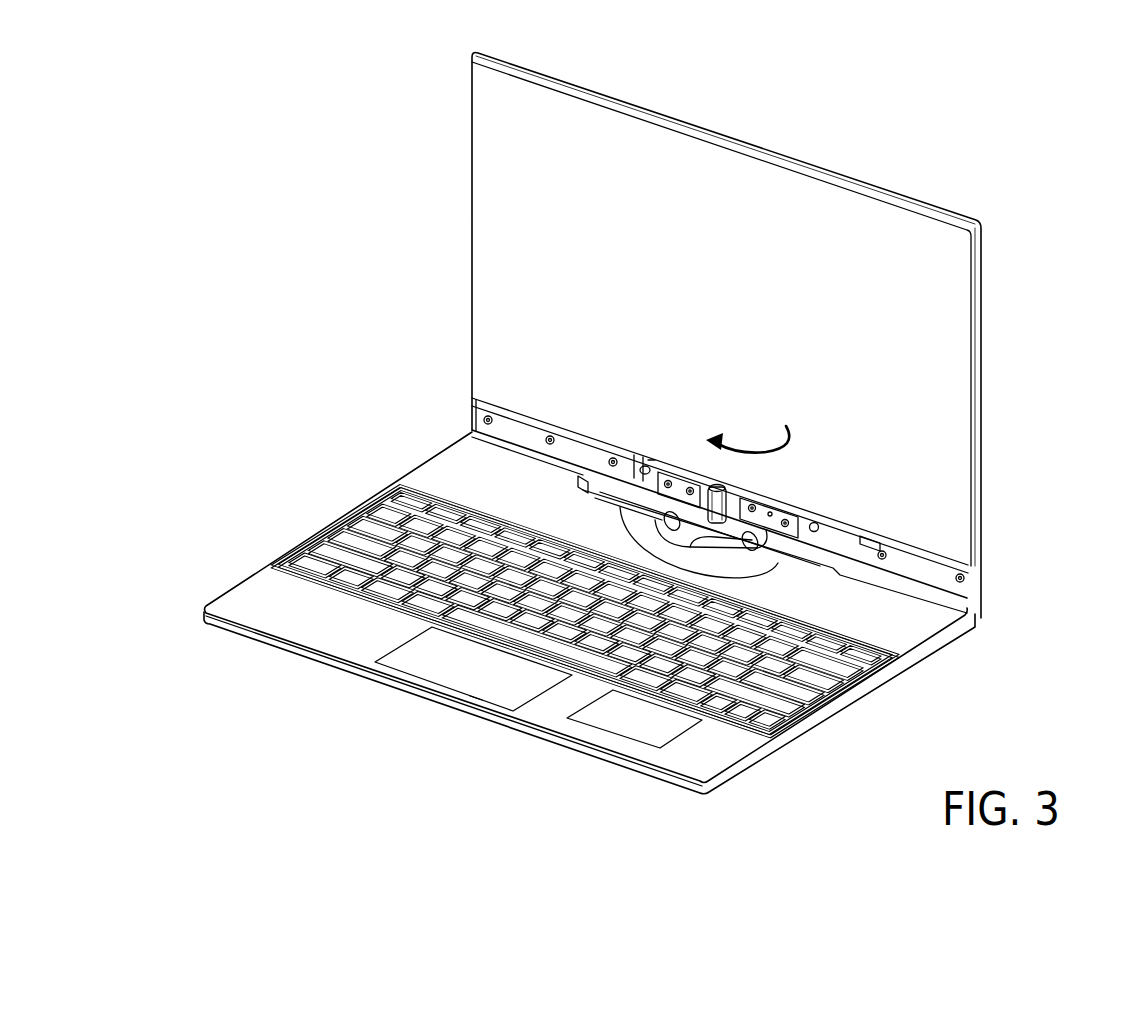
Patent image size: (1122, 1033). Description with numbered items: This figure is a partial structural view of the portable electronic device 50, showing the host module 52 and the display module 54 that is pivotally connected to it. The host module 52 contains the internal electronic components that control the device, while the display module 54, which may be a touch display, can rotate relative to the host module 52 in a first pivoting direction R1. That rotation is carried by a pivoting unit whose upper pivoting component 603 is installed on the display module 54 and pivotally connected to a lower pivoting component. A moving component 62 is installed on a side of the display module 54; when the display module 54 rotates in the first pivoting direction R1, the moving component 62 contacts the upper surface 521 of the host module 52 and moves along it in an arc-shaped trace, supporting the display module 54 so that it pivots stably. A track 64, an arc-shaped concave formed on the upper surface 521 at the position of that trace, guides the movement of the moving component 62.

The portable electronic device 50 is at (647, 423).
The host module 52 is at (647, 605).
The upper surface of the host module 521 is at (462, 478).
The display module 54 is at (942, 284).
The upper pivoting component 603 is at (694, 481).
The moving component 62 is at (815, 521).
The track 64 is at (724, 502).
The first pivoting direction R1 is at (764, 440).